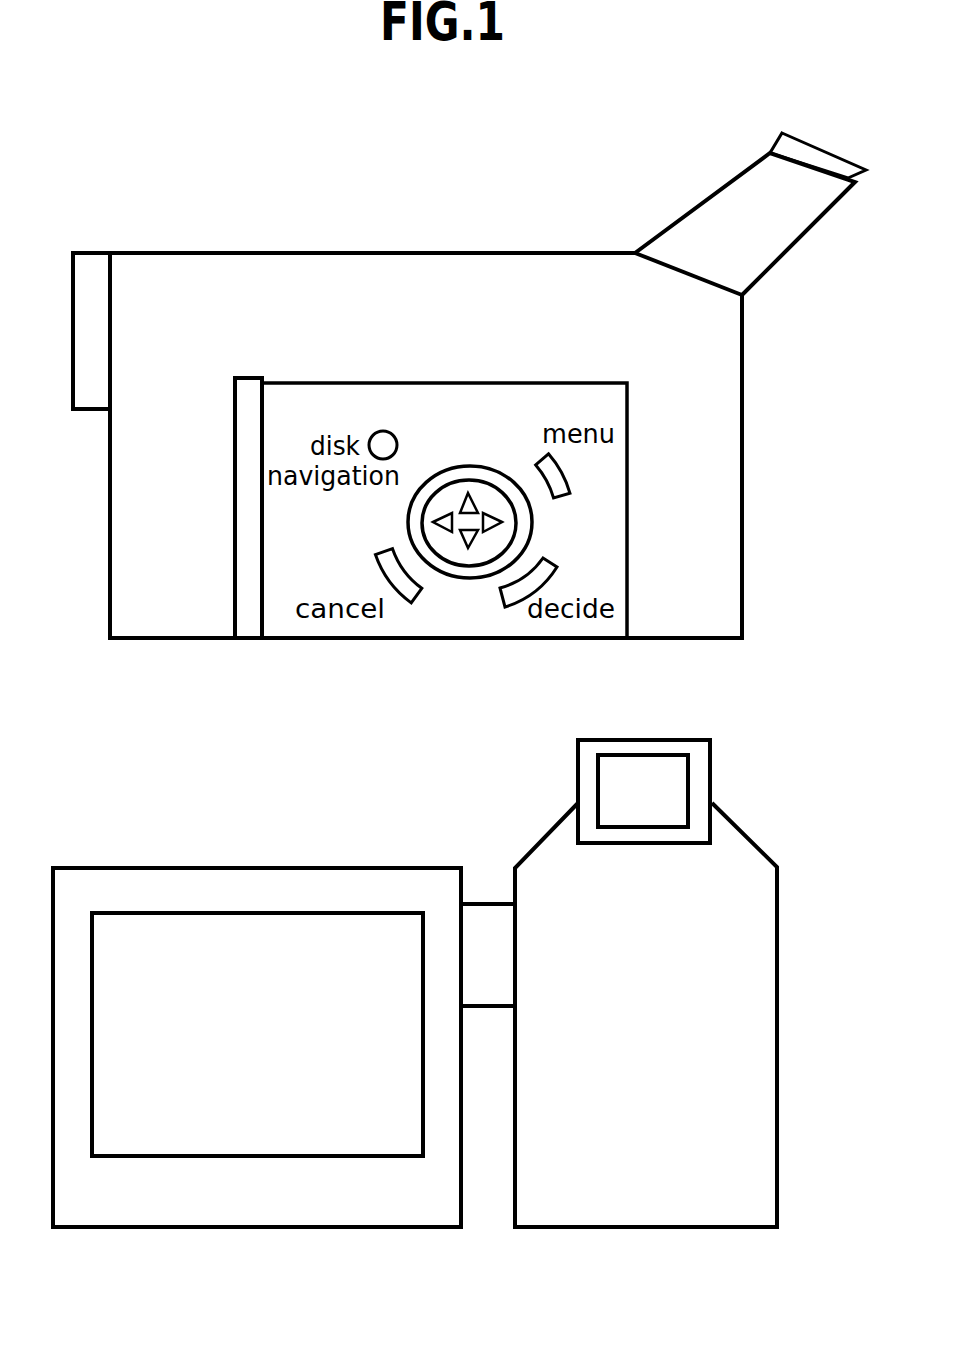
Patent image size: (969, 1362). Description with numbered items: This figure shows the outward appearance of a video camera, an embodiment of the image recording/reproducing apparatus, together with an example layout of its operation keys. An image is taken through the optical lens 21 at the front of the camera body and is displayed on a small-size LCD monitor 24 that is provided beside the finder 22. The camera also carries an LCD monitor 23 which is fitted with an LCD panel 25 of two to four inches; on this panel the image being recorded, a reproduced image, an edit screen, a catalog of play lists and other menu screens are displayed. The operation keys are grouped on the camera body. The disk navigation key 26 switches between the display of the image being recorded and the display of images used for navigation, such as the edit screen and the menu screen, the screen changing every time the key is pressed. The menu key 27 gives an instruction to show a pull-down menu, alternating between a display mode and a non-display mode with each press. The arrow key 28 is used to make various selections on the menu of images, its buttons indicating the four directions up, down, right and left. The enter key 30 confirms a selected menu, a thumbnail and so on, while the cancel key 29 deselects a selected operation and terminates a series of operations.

The optical lens 21 is at (97, 253).
The finder 22 is at (687, 212).
The LCD monitor 23 is at (252, 378).
The small-size LCD monitor 24 is at (670, 753).
The LCD panel 25 is at (200, 913).
The disk navigation key 26 is at (386, 431).
The menu key 27 is at (568, 472).
The arrow key 28 is at (533, 518).
The cancel key 29 is at (420, 598).
The enter key 30 is at (555, 565).